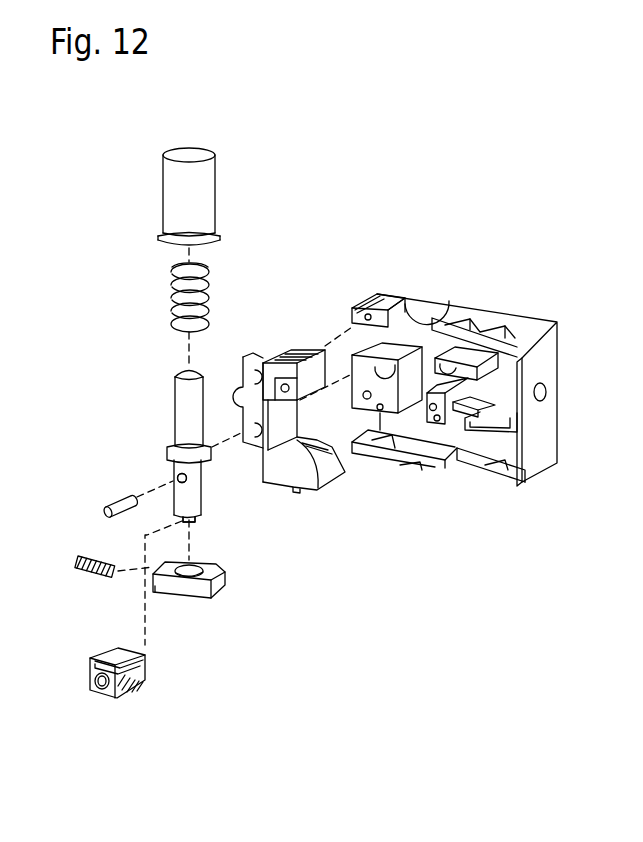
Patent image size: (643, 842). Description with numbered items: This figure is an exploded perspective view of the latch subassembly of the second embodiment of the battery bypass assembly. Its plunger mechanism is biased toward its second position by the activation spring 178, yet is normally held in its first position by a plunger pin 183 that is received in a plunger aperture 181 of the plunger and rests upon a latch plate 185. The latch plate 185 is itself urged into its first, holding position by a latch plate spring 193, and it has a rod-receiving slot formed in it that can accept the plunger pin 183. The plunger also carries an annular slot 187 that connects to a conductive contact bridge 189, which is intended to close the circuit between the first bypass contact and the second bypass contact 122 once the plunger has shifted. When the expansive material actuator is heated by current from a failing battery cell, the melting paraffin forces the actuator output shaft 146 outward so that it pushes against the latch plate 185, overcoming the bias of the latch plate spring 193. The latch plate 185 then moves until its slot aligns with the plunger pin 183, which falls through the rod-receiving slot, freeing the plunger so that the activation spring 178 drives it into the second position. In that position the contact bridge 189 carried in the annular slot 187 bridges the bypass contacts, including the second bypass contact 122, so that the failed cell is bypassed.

The second bypass contact 122 is at (292, 343).
The actuator output shaft 146 is at (176, 405).
The activation spring 178 is at (170, 292).
The plunger aperture 181 is at (187, 481).
The plunger pin 183 is at (125, 495).
The latch plate 185 is at (218, 589).
The annular slot 187 is at (198, 518).
The contact bridge 189 is at (140, 682).
The latch plate spring 193 is at (117, 572).